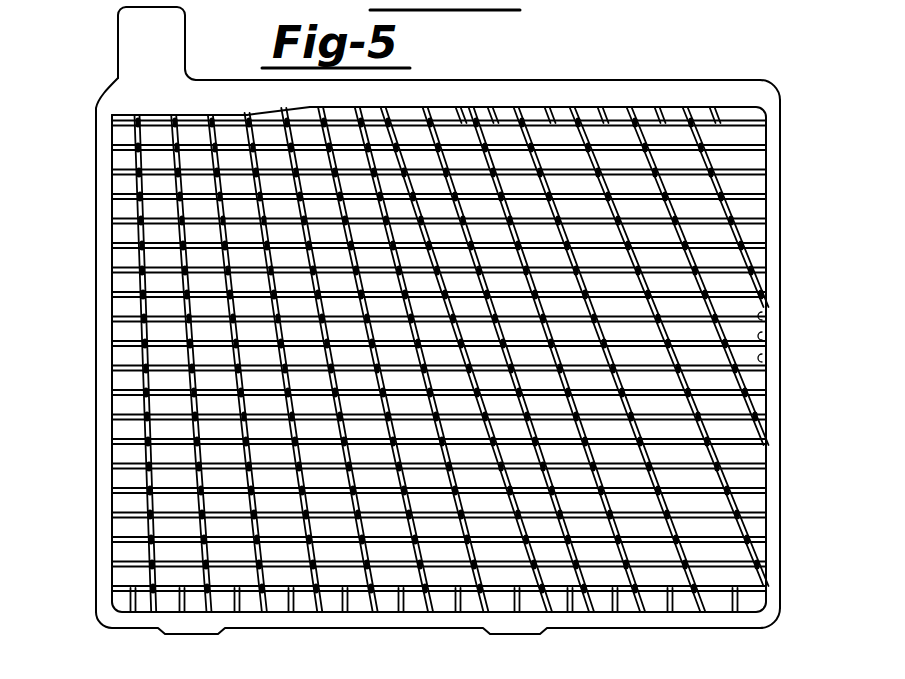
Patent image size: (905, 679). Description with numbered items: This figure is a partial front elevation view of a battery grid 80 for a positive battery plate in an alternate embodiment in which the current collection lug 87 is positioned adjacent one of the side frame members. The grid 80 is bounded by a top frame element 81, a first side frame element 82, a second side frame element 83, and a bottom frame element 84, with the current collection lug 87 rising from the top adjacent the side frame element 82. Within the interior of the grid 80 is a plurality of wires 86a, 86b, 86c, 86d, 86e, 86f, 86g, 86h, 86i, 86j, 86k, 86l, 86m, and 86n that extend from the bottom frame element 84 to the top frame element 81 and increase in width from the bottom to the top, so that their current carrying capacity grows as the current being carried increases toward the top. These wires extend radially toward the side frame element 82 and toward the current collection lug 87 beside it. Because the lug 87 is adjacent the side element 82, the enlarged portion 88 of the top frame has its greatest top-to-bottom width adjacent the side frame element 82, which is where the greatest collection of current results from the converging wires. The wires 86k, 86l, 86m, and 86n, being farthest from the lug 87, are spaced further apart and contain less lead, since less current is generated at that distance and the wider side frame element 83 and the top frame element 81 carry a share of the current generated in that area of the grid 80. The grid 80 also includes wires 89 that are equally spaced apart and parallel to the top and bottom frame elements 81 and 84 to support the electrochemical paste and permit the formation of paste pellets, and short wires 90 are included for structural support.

The grid 80 is at (586, 70).
The top frame element 81 is at (645, 80).
The first side frame element 82 is at (98, 338).
The second side frame element 83 is at (780, 232).
The bottom frame element 84 is at (262, 624).
The current collection lug 87 is at (168, 35).
The enlarged portion 88 is at (215, 108).
The wires 89 is at (752, 358).
The short wires 90 is at (703, 108).
The wire 86a is at (130, 188).
The wire 86b is at (170, 212).
The wire 86c is at (135, 238).
The wire 86d is at (258, 257).
The wire 86e is at (330, 376).
The wire 86f is at (320, 408).
The wire 86g is at (463, 548).
The wire 86h is at (528, 568).
The wire 86i is at (770, 530).
The wire 86j is at (762, 456).
The wire 86k is at (765, 414).
The wire 86l is at (755, 283).
The wire 86m is at (750, 270).
The wire 86n is at (720, 190).